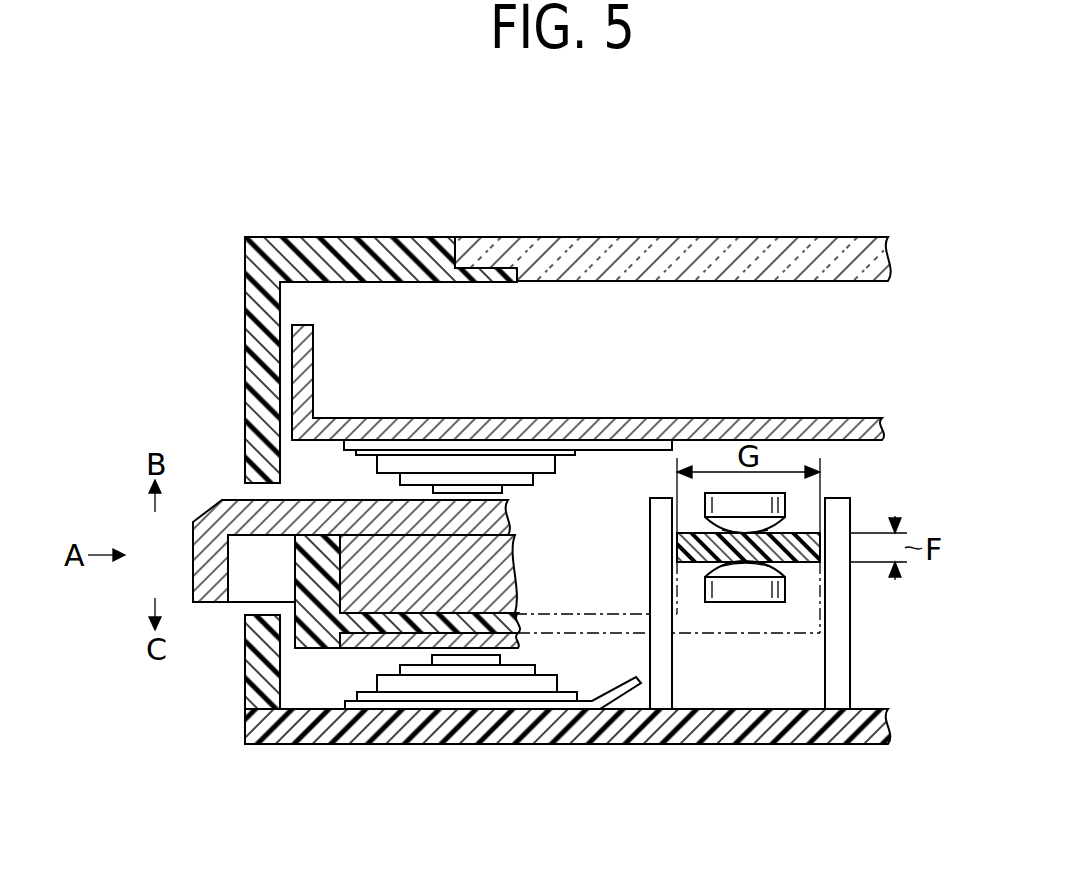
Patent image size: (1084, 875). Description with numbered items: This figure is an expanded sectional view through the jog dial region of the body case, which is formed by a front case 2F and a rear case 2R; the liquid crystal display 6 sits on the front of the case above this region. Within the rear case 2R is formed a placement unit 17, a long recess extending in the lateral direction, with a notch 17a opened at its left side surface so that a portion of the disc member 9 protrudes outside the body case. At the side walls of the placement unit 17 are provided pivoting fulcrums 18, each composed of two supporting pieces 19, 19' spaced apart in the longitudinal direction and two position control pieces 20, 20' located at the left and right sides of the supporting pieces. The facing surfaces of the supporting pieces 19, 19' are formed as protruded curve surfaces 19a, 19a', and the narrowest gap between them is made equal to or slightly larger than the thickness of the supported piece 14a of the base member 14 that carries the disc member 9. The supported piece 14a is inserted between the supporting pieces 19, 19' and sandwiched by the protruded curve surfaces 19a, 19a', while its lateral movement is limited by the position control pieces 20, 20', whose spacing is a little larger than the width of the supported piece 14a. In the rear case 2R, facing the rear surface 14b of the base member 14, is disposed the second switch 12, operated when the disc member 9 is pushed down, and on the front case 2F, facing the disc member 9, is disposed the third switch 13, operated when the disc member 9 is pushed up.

The front case 2F is at (384, 250).
The liquid crystal display 6 is at (712, 250).
The disc member 9 is at (193, 557).
The second switch 12 is at (527, 652).
The third switch 13 is at (516, 487).
The base member 14 is at (627, 633).
The supported piece 14a is at (812, 550).
The rear surface 14b is at (353, 650).
The placement unit 17 is at (797, 707).
The notch 17a is at (243, 605).
The pivoting fulcrum 18 is at (812, 488).
The supporting piece 19 is at (745, 690).
The supporting piece 19' is at (698, 491).
The protruded curve surface 19a is at (721, 691).
The protruded curve surface 19a' is at (828, 590).
The position control piece 20 is at (622, 603).
The position control piece 20' is at (889, 603).
The rear case 2R is at (435, 745).